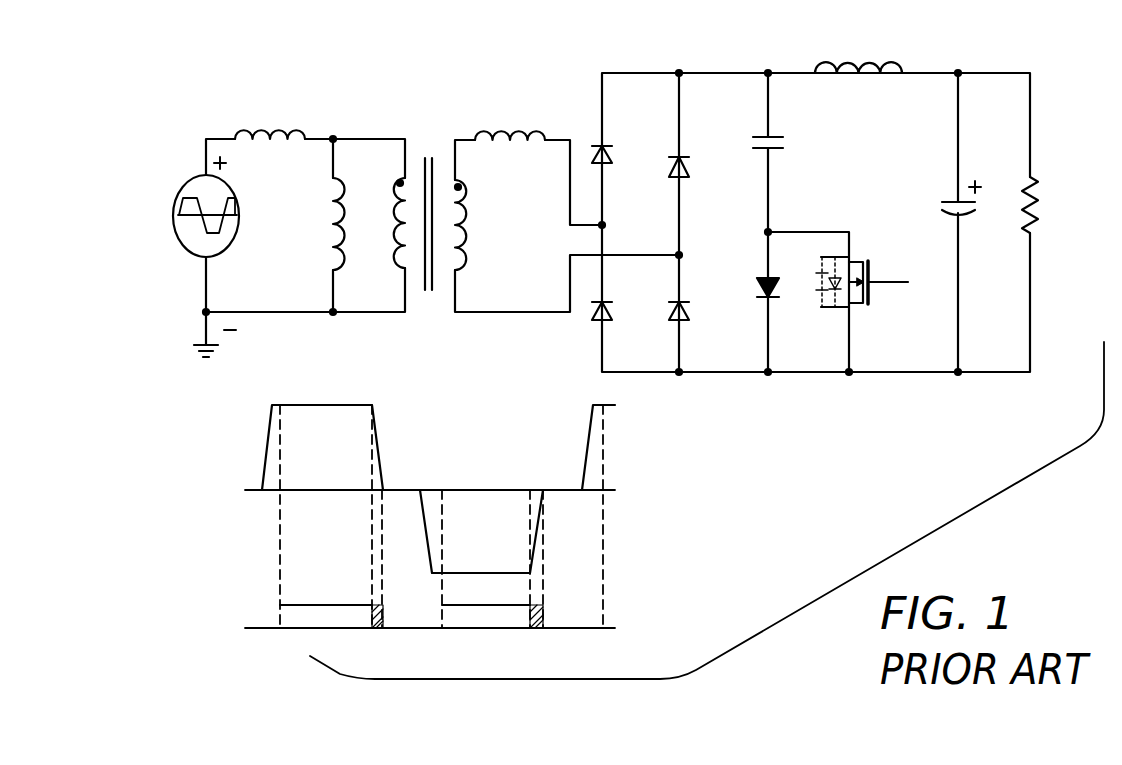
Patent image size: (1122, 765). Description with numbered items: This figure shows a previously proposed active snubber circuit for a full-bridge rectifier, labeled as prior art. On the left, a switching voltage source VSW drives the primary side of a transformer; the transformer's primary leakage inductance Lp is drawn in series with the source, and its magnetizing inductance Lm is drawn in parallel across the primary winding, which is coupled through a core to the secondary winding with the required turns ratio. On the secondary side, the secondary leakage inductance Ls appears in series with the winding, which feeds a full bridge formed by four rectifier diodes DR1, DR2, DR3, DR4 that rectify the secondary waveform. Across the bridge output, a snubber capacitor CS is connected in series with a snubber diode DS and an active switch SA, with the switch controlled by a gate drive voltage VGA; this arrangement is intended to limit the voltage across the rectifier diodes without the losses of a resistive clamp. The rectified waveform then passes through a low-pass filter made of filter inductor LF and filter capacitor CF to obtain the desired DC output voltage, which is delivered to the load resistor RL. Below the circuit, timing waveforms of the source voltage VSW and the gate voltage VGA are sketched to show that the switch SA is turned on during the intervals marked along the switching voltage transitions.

The switching voltage source VSW is at (194, 320).
The primary leakage inductance Lp is at (270, 119).
The magnetizing inductance Lm is at (317, 224).
The secondary leakage inductance Ls is at (510, 120).
The rectifier diode DR1 is at (625, 181).
The rectifier diode DR2 is at (703, 327).
The rectifier diode DR3 is at (625, 327).
The rectifier diode DR4 is at (703, 186).
The snubber capacitor CS is at (789, 142).
The snubber diode DS is at (749, 289).
The active switch (MOSFET) SA is at (856, 297).
The gate drive voltage VGA is at (554, 430).
The low-pass filter inductor LF is at (858, 52).
The low-pass filter capacitor CF is at (970, 217).
The load resistor RL is at (1047, 215).